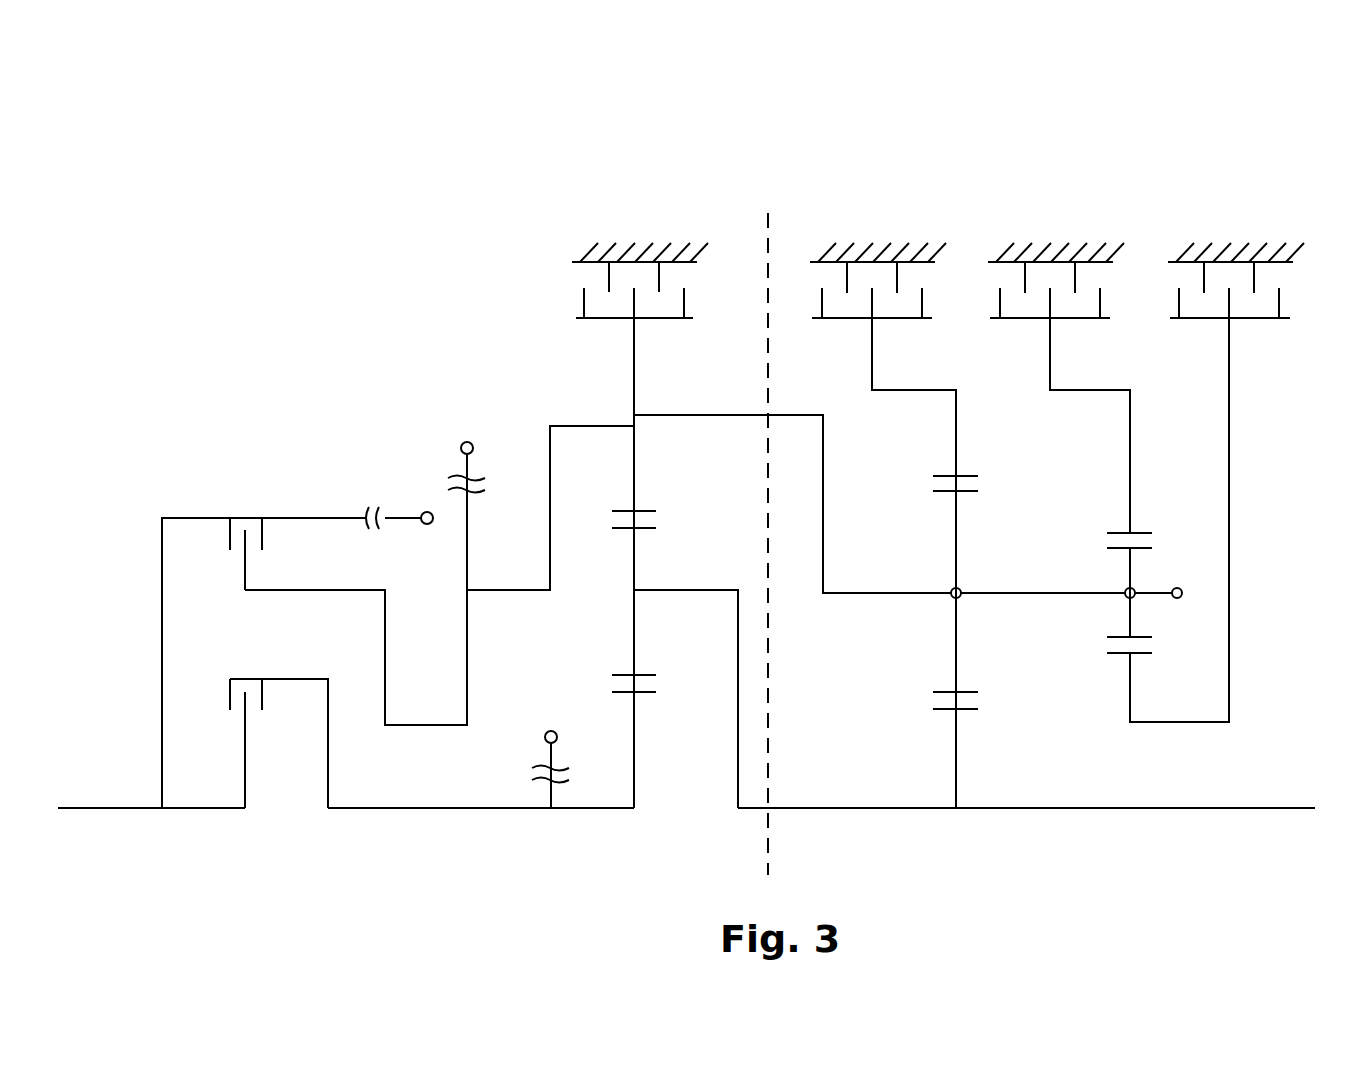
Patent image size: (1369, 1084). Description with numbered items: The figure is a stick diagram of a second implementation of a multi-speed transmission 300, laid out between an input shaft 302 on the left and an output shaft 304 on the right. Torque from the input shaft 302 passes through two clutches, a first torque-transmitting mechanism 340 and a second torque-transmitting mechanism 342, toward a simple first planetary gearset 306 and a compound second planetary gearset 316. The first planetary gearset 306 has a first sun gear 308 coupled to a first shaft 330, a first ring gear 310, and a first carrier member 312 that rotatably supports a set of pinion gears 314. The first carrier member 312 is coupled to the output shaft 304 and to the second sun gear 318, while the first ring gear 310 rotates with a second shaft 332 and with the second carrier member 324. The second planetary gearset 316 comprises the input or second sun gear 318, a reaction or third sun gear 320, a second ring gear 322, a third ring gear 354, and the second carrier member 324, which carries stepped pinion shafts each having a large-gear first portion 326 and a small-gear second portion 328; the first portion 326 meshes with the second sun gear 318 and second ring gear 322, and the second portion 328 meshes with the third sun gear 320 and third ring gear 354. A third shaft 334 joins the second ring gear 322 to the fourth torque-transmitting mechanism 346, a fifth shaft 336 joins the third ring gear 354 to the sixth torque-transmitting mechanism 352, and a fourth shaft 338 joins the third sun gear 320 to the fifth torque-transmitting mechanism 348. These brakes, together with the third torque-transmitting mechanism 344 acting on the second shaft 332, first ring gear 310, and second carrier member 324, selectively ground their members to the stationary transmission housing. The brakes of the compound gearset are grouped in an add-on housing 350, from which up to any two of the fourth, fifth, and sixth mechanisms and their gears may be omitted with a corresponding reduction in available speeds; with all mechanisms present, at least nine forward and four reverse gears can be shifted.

The multi-speed transmission 300 is at (273, 193).
The input shaft 302 is at (100, 808).
The output shaft 304 is at (1288, 808).
The first planetary gearset 306 is at (627, 621).
The first sun gear 308 is at (645, 692).
The first ring gear 310 is at (648, 512).
The first carrier member 312 is at (630, 592).
The pinion gears 314 is at (648, 675).
The second planetary gearset 316 is at (1014, 660).
The second sun gear 318 is at (945, 712).
The third sun gear 320 is at (1118, 653).
The second ring gear 322 is at (970, 473).
The second carrier member 324 is at (1033, 578).
The first portion 326 is at (945, 495).
The second portion 328 is at (1120, 637).
The first shaft 330 is at (458, 810).
The second shaft 332 is at (310, 590).
The third shaft 334 is at (872, 352).
The fifth shaft 336 is at (1050, 357).
The fourth shaft 338 is at (1229, 482).
The first torque-transmitting mechanism 340 is at (227, 693).
The second torque-transmitting mechanism 342 is at (227, 532).
The third torque-transmitting mechanism 344 is at (548, 285).
The fourth torque-transmitting mechanism 346 is at (927, 278).
The fifth torque-transmitting mechanism 348 is at (1300, 277).
The add-on housing 350 is at (1058, 158).
The sixth torque-transmitting mechanism 352 is at (1105, 278).
The third ring gear 354 is at (1143, 528).